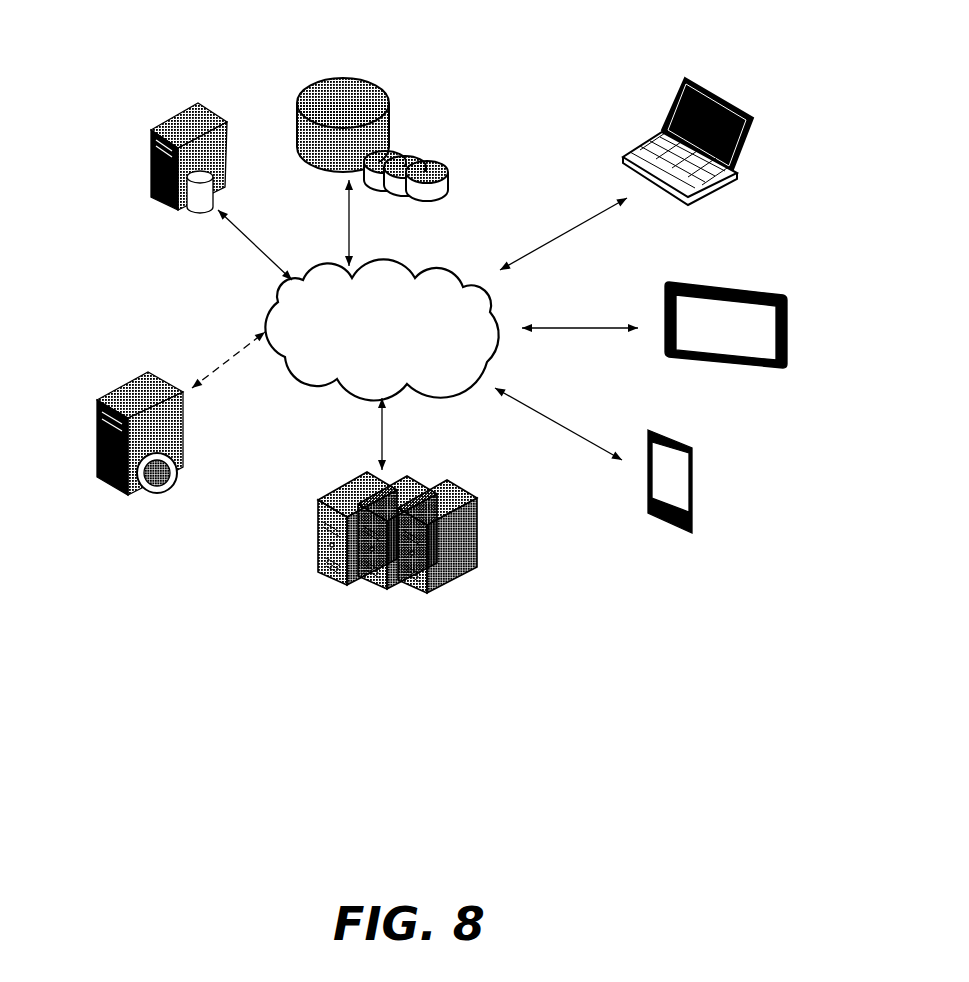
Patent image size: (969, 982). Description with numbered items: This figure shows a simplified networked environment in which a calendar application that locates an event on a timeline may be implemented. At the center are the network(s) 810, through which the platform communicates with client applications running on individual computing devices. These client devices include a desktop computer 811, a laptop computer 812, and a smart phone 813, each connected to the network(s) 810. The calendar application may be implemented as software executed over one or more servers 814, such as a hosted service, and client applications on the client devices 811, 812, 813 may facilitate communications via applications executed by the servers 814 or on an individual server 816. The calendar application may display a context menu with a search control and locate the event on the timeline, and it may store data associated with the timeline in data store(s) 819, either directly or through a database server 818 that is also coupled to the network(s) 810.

The network(s) 810 is at (385, 252).
The desktop computer 811 is at (722, 78).
The laptop computer 812 is at (760, 268).
The smart phone 813 is at (700, 445).
The servers 814 is at (347, 480).
The individual server 816 is at (118, 382).
The database server 818 is at (190, 220).
The data store(s) 819 is at (357, 55).